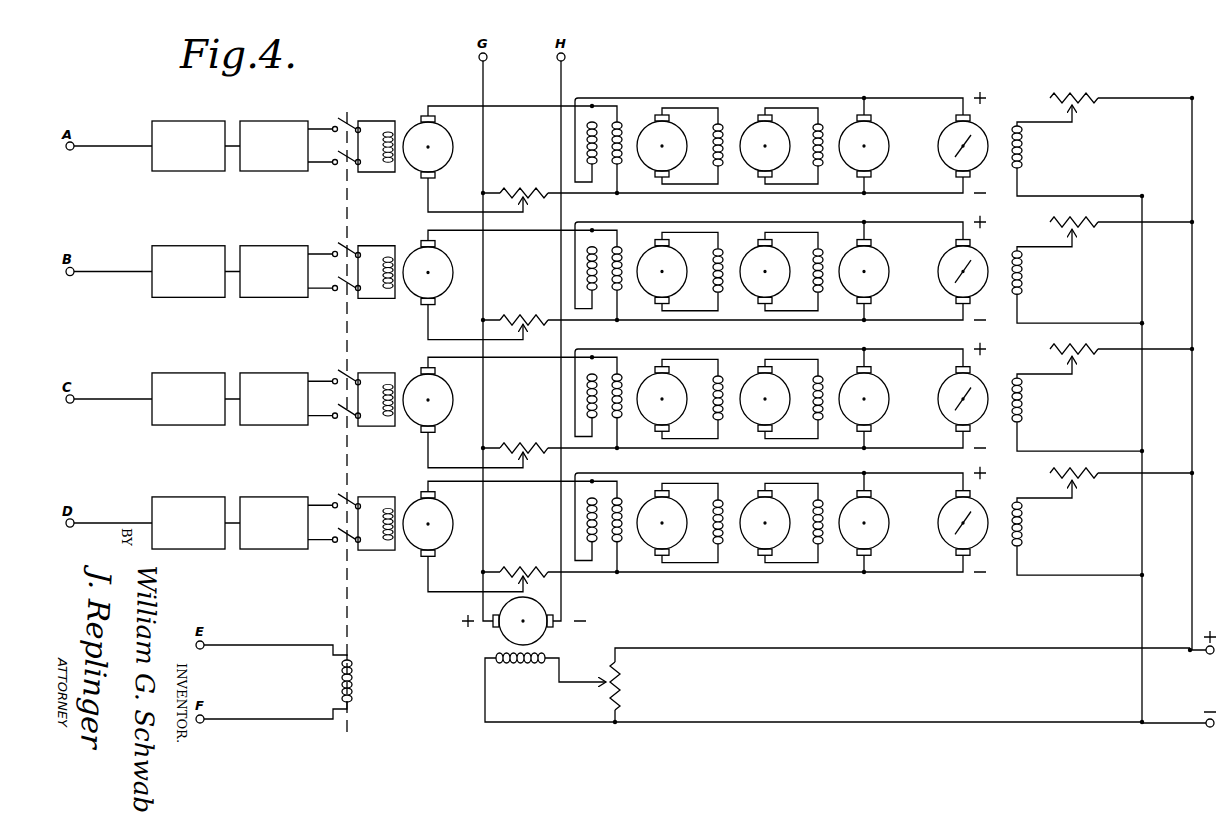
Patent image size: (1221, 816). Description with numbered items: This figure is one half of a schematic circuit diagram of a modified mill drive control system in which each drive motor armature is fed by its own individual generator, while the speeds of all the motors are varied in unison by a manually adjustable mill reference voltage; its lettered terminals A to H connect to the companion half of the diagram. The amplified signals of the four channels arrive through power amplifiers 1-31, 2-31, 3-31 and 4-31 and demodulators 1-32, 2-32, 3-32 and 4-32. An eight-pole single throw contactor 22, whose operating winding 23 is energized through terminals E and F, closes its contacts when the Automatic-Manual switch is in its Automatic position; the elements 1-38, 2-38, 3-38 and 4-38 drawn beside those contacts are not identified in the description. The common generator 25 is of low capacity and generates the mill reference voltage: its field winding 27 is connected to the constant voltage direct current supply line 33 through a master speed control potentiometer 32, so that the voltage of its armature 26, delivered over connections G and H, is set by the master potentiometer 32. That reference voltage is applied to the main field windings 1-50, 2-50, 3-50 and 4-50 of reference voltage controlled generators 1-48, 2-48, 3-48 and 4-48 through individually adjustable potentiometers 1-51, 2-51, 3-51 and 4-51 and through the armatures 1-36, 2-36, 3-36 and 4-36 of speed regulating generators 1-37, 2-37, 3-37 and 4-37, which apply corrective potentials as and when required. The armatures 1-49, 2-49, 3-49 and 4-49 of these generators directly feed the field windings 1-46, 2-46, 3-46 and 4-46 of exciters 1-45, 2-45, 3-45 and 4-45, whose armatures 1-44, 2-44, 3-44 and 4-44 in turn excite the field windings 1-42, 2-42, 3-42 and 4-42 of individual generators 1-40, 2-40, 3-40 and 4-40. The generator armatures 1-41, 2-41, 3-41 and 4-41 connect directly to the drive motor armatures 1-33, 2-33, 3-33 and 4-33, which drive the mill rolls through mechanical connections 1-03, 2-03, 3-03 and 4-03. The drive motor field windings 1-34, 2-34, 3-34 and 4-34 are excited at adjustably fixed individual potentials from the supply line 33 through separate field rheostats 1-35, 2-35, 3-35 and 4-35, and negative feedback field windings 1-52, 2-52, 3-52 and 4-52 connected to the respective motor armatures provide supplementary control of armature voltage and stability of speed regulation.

The eight-pole single throw contactor 22 is at (345, 572).
The operating winding 23 is at (340, 678).
The common generator 25 is at (790, 655).
The armature 26 is at (548, 606).
The field winding 27 is at (540, 666).
The master speed control potentiometer 32 is at (620, 682).
The constant voltage direct current supply line 33 is at (1172, 655).
The power amplifier 1-31 is at (196, 113).
The power amplifier 2-31 is at (188, 259).
The power amplifier 3-31 is at (188, 386).
The power amplifier 4-31 is at (188, 510).
The demodulator 1-32 is at (281, 113).
The demodulator 2-32 is at (274, 259).
The demodulator 3-32 is at (274, 386).
The demodulator 4-32 is at (274, 510).
The drive motor armature 1-33 is at (988, 134).
The drive motor armature 2-33 is at (981, 265).
The drive motor armature 3-33 is at (981, 392).
The drive motor armature 4-33 is at (981, 516).
The drive motor field winding 1-34 is at (1025, 170).
The drive motor field winding 2-34 is at (1078, 277).
The drive motor field winding 3-34 is at (1078, 404).
The drive motor field winding 4-34 is at (1078, 528).
The field rheostat 1-35 is at (1088, 92).
The field rheostat 2-35 is at (1122, 204).
The field rheostat 3-35 is at (1122, 332).
The field rheostat 4-35 is at (1122, 456).
The armature of speed regulating generator 1-36 is at (450, 140).
The armature of speed regulating generator 2-36 is at (497, 284).
The armature of speed regulating generator 3-36 is at (497, 412).
The armature of speed regulating generator 4-36 is at (497, 536).
The speed regulating generator 1-37 is at (490, 149).
The speed regulating generator 2-37 is at (490, 275).
The speed regulating generator 3-37 is at (490, 403).
The speed regulating generator 4-37 is at (490, 527).
The relay 1-38 is at (385, 128).
The relay 2-38 is at (377, 286).
The relay 3-38 is at (377, 414).
The relay 4-38 is at (377, 538).
The individual generator 1-40 is at (875, 126).
The individual generator 2-40 is at (875, 251).
The individual generator 3-40 is at (875, 378).
The individual generator 4-40 is at (875, 502).
The armature of individual generator 1-41 is at (887, 134).
The armature of individual generator 2-41 is at (878, 271).
The armature of individual generator 3-41 is at (878, 399).
The armature of individual generator 4-41 is at (878, 523).
The field winding of individual generator 1-42 is at (816, 123).
The field winding of individual generator 2-42 is at (812, 245).
The field winding of individual generator 3-42 is at (812, 372).
The field winding of individual generator 4-42 is at (812, 496).
The exciter armature 1-44 is at (755, 119).
The exciter armature 2-44 is at (778, 254).
The exciter armature 3-44 is at (778, 381).
The exciter armature 4-44 is at (778, 505).
The exciter 1-45 is at (742, 125).
The exciter 2-45 is at (779, 271).
The exciter 3-45 is at (779, 398).
The exciter 4-45 is at (779, 522).
The exciter field winding 1-46 is at (715, 137).
The exciter field winding 2-46 is at (704, 263).
The exciter field winding 3-46 is at (704, 390).
The exciter field winding 4-46 is at (704, 514).
The reference voltage controlled generator 1-48 is at (640, 112).
The reference voltage controlled generator 2-48 is at (624, 257).
The reference voltage controlled generator 3-48 is at (624, 384).
The reference voltage controlled generator 4-48 is at (624, 508).
The armature of reference voltage controlled generator 1-49 is at (680, 156).
The armature of reference voltage controlled generator 2-49 is at (677, 271).
The armature of reference voltage controlled generator 3-49 is at (677, 398).
The armature of reference voltage controlled generator 4-49 is at (677, 522).
The main field winding 1-50 is at (612, 117).
The main field winding 2-50 is at (769, 253).
The main field winding 3-50 is at (769, 380).
The main field winding 4-50 is at (769, 504).
The individually adjustable potentiometer 1-51 is at (530, 186).
The individually adjustable potentiometer 2-51 is at (524, 310).
The individually adjustable potentiometer 3-51 is at (524, 438).
The individually adjustable potentiometer 4-51 is at (524, 562).
The negative feedback field winding 1-52 is at (588, 133).
The negative feedback field winding 2-52 is at (553, 259).
The negative feedback field winding 3-52 is at (553, 386).
The negative feedback field winding 4-52 is at (553, 510).
The mechanical connection 1-03 is at (971, 140).
The mechanical connection 2-03 is at (970, 265).
The mechanical connection 3-03 is at (970, 392).
The mechanical connection 4-03 is at (970, 516).